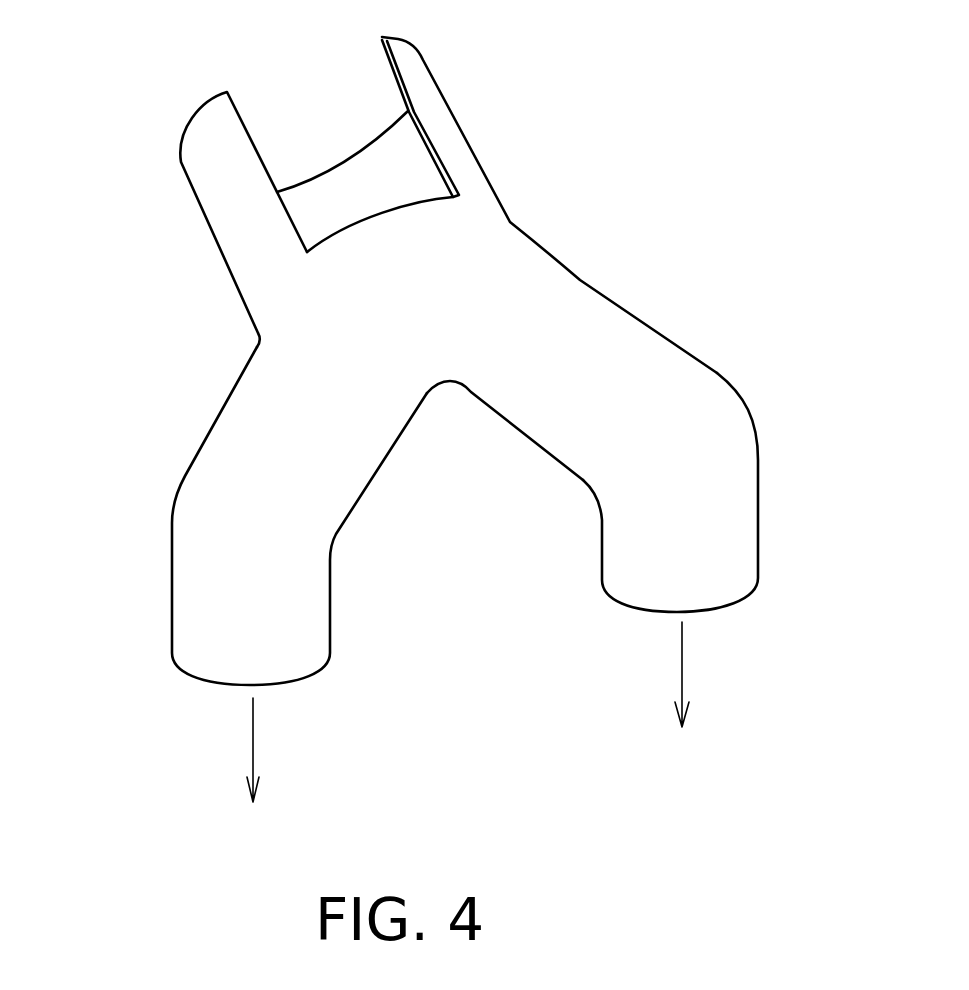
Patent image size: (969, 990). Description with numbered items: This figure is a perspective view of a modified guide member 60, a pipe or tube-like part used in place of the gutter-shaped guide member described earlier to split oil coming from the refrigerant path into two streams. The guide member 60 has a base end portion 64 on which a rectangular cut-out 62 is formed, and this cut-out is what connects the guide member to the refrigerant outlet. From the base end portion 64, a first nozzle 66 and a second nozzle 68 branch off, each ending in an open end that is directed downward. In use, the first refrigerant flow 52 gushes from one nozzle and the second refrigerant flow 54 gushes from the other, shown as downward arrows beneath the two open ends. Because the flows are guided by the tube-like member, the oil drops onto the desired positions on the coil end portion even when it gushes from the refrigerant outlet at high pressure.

The guide member 60 is at (512, 221).
The rectangular cut-out 62 is at (392, 75).
The base end portion 64 is at (213, 238).
The first nozzle 66 is at (172, 592).
The second nozzle 68 is at (762, 490).
The first refrigerant flow 52 is at (253, 740).
The second refrigerant flow 54 is at (683, 667).